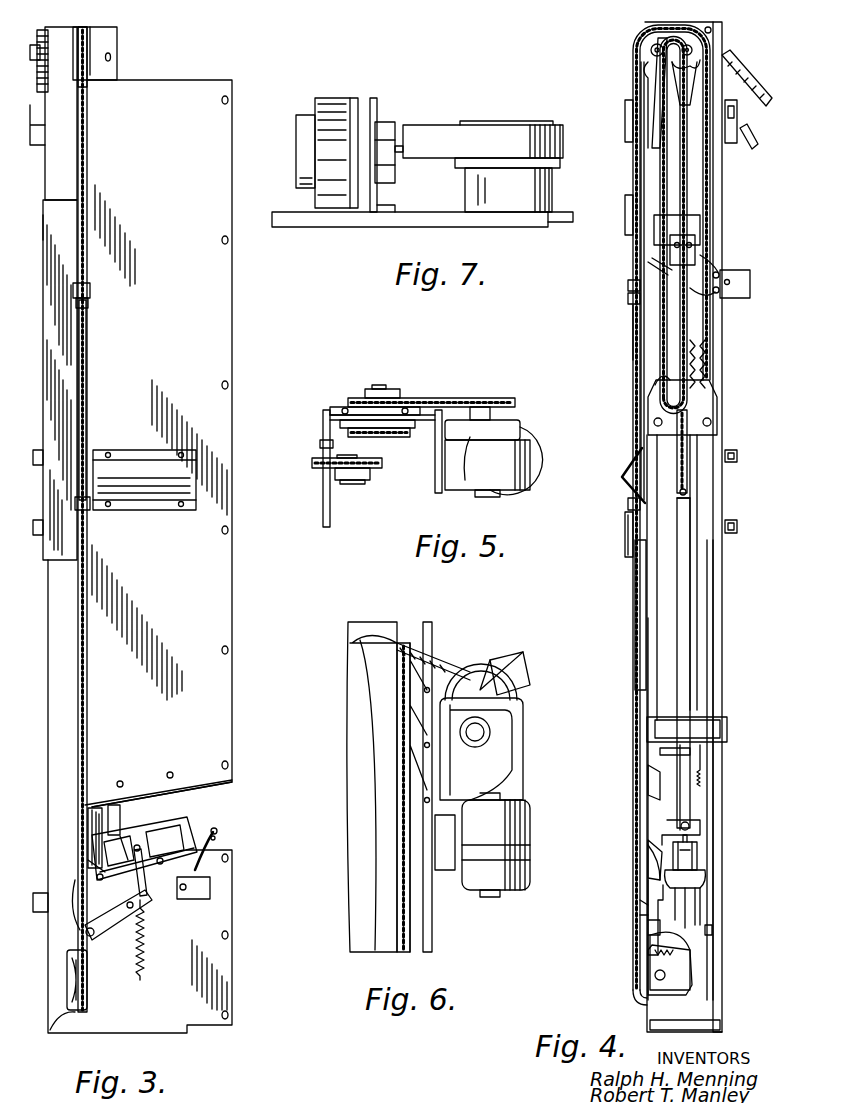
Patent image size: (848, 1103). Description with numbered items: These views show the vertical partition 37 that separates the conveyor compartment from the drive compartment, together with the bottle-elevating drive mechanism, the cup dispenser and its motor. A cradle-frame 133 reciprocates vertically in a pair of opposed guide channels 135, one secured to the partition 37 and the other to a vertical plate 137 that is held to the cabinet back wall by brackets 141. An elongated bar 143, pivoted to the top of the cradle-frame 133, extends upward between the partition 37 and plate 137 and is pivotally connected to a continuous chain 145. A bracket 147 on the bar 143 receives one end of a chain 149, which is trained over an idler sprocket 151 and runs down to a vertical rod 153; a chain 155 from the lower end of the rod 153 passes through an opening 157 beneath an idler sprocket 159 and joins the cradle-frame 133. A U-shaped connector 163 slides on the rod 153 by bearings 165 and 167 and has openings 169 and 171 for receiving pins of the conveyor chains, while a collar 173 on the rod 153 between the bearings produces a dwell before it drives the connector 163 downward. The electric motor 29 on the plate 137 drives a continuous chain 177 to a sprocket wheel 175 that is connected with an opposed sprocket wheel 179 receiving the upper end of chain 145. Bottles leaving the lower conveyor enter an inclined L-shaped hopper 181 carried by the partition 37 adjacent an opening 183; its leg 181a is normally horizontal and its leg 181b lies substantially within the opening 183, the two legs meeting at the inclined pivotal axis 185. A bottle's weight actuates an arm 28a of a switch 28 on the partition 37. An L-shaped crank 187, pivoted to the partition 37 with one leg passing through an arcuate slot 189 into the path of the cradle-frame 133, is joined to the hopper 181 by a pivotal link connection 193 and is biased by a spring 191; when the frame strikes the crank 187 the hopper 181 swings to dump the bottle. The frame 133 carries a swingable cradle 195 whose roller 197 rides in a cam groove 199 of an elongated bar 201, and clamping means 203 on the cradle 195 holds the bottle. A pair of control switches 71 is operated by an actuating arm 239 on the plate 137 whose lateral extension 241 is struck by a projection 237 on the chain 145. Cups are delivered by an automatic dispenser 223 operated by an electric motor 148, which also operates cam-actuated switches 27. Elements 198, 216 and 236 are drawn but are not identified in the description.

In FIG. 7, the cam-actuated switches 27 is at (396, 174).
In FIG. 3, the switch 28 is at (200, 893).
In FIG. 3, the switch arm 28a is at (222, 837).
In FIG. 5, the electric motor 29 is at (520, 492).
In FIG. 6, the electric motor 29 is at (523, 805).
In FIG. 3, the vertical partition 37 is at (233, 677).
In FIG. 5, the vertical partition 37 is at (323, 512).
In FIG. 4, the vertical partition 37 is at (648, 618).
In FIG. 4, the control switches 71 is at (750, 285).
In FIG. 4, the cradle-frame 133 is at (700, 822).
In FIG. 4, the guide channels 135 is at (714, 630).
In FIG. 3, the vertical plate 137 is at (118, 42).
In FIG. 5, the vertical plate 137 is at (435, 485).
In FIG. 6, the vertical plate 137 is at (433, 930).
In FIG. 4, the vertical plate 137 is at (720, 410).
In FIG. 3, the brackets 141 is at (38, 912).
In FIG. 4, the brackets 141 is at (738, 112).
In FIG. 4, the elongated bar 143 is at (690, 790).
In FIG. 5, the continuous chain 145 is at (345, 433).
In FIG. 6, the continuous chain 145 is at (402, 880).
In FIG. 4, the continuous chain 145 is at (708, 365).
In FIG. 4, the bracket 147 is at (690, 493).
In FIG. 7, the electric motor 148 is at (330, 100).
In FIG. 3, the chain 149 is at (88, 156).
In FIG. 5, the chain 149 is at (382, 462).
In FIG. 4, the chain 149 is at (688, 438).
In FIG. 5, the idler sprocket 151 is at (370, 476).
In FIG. 4, the idler sprocket 151 is at (645, 50).
In FIG. 3, the vertical rod 153 is at (87, 399).
In FIG. 4, the vertical rod 153 is at (632, 326).
In FIG. 3, the chain 155 is at (87, 733).
In FIG. 4, the chain 155 is at (632, 712).
In FIG. 3, the opening 157 is at (50, 1030).
In FIG. 3, the idler sprocket 159 is at (85, 972).
In FIG. 4, the idler sprocket 159 is at (668, 990).
In FIG. 3, the elongated connector 163 is at (60, 332).
In FIG. 4, the elongated connector 163 is at (640, 448).
In FIG. 3, the bearing 165 is at (90, 290).
In FIG. 4, the bearing 165 is at (628, 285).
In FIG. 3, the bearing 167 is at (90, 512).
In FIG. 4, the bearing 167 is at (628, 504).
In FIG. 3, the opening 169 is at (43, 228).
In FIG. 4, the opening 169 is at (633, 225).
In FIG. 3, the opening 171 is at (42, 548).
In FIG. 4, the opening 171 is at (625, 535).
In FIG. 3, the collar 173 is at (90, 303).
In FIG. 4, the collar 173 is at (628, 298).
In FIG. 5, the sprocket wheel 175 is at (365, 390).
In FIG. 5, the continuous chain 177 is at (460, 398).
In FIG. 6, the continuous chain 177 is at (425, 660).
In FIG. 4, the continuous chain 177 is at (760, 95).
In FIG. 5, the sprocket wheel 179 is at (395, 390).
In FIG. 4, the sprocket wheel 179 is at (692, 52).
In FIG. 3, the L-shaped hopper 181 is at (190, 820).
In FIG. 4, the L-shaped hopper 181 is at (648, 880).
In FIG. 3, the hopper leg 181a is at (142, 832).
In FIG. 4, the hopper leg 181b is at (648, 845).
In FIG. 3, the opening 183 is at (230, 786).
In FIG. 4, the opening 183 is at (648, 800).
In FIG. 3, the pivotal axis 185 is at (214, 832).
In FIG. 4, the pivotal axis 185 is at (645, 900).
In FIG. 3, the L-shaped crank 187 is at (115, 925).
In FIG. 4, the L-shaped crank 187 is at (648, 928).
In FIG. 3, the arcuate slot 189 is at (86, 932).
In FIG. 3, the spring 191 is at (142, 958).
In FIG. 3, the pivotal link connection 193 is at (137, 882).
In FIG. 4, the bottle-receiving cradle 195 is at (705, 878).
In FIG. 4, the roller 197 is at (709, 935).
In FIG. 6, the arm 198 is at (515, 672).
In FIG. 3, the cam groove 199 is at (122, 810).
In FIG. 3, the elongated bar 201 is at (86, 812).
In FIG. 4, the clamping means 203 is at (648, 262).
In FIG. 6, the gear 216 is at (480, 690).
In FIG. 7, the automatic dispenser 223 is at (560, 122).
In FIG. 4, the bracket 236 is at (728, 712).
In FIG. 4, the projection 237 is at (655, 385).
In FIG. 4, the actuating arm 239 is at (716, 295).
In FIG. 4, the lateral extension 241 is at (720, 262).